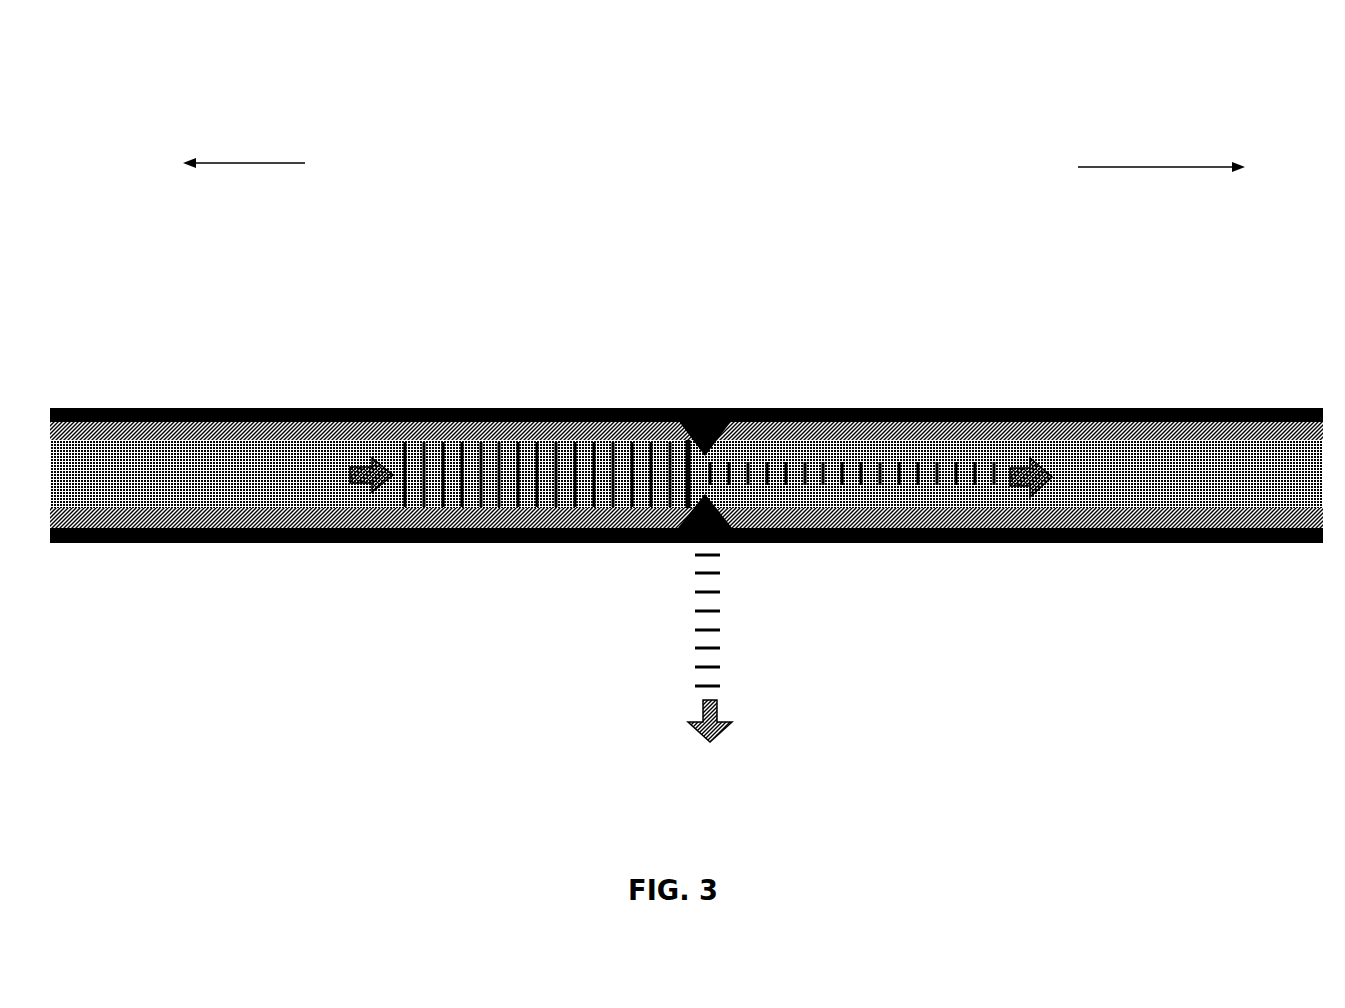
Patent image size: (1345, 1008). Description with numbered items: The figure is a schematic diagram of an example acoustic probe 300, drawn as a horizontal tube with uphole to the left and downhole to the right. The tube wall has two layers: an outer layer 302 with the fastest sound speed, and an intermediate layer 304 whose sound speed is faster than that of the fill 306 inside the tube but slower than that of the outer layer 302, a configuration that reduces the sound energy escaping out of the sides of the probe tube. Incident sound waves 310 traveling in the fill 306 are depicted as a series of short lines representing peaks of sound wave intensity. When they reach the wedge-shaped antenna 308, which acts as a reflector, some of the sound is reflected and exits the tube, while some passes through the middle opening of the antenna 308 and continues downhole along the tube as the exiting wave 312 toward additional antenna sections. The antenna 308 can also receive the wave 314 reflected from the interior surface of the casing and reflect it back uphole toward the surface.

The acoustic probe 300 is at (967, 60).
The outer layer 302 is at (483, 410).
The intermediate layer 304 is at (377, 510).
The fill 306 is at (180, 475).
The antenna 308 is at (717, 428).
The incident sound waves 310 is at (568, 482).
The exiting wave 312 is at (848, 483).
The reflected wave 314 is at (695, 668).